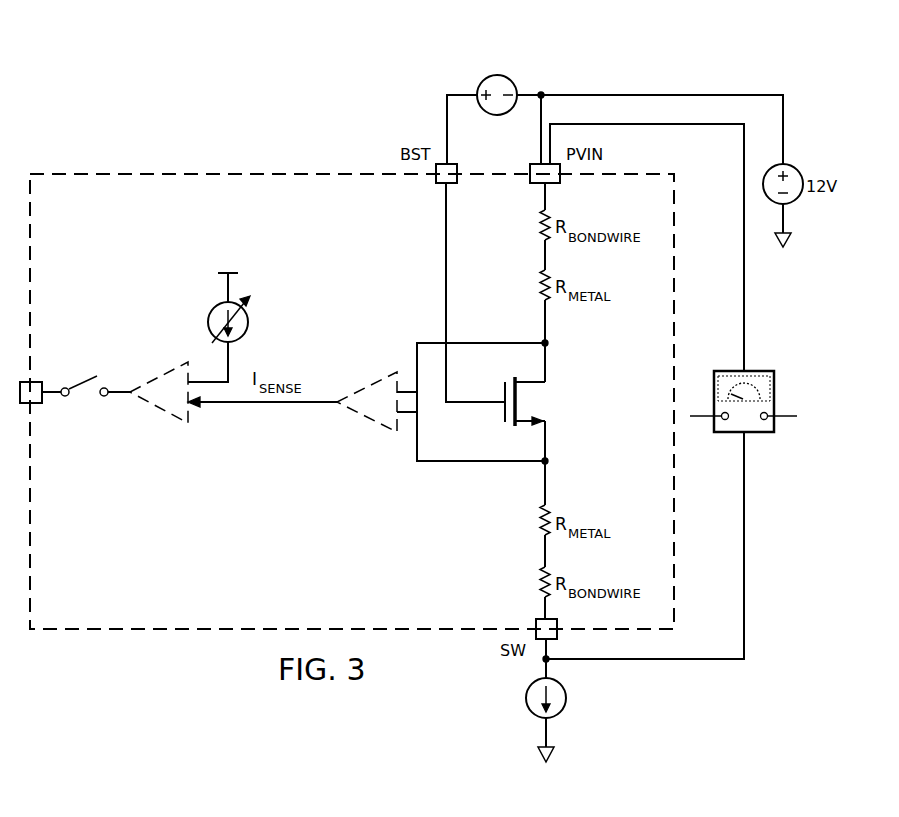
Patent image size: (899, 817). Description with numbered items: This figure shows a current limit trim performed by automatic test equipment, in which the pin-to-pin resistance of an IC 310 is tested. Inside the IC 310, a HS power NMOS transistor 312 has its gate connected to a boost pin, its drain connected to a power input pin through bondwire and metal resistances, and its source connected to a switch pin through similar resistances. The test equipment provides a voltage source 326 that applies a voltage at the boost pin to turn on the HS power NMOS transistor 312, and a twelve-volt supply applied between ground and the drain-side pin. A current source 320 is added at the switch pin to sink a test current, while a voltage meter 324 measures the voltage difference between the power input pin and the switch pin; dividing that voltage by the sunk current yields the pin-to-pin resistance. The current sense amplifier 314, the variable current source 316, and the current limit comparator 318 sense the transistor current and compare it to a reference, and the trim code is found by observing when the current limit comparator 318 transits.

The IC 310 is at (190, 170).
The HS power NMOS transistor 312 is at (503, 411).
The current sense amplifier 314 is at (368, 415).
The variable current source 316 is at (209, 322).
The current limit comparator 318 is at (128, 408).
The current source 320 is at (566, 700).
The voltage meter 324 is at (762, 370).
The voltage source 326 is at (505, 78).